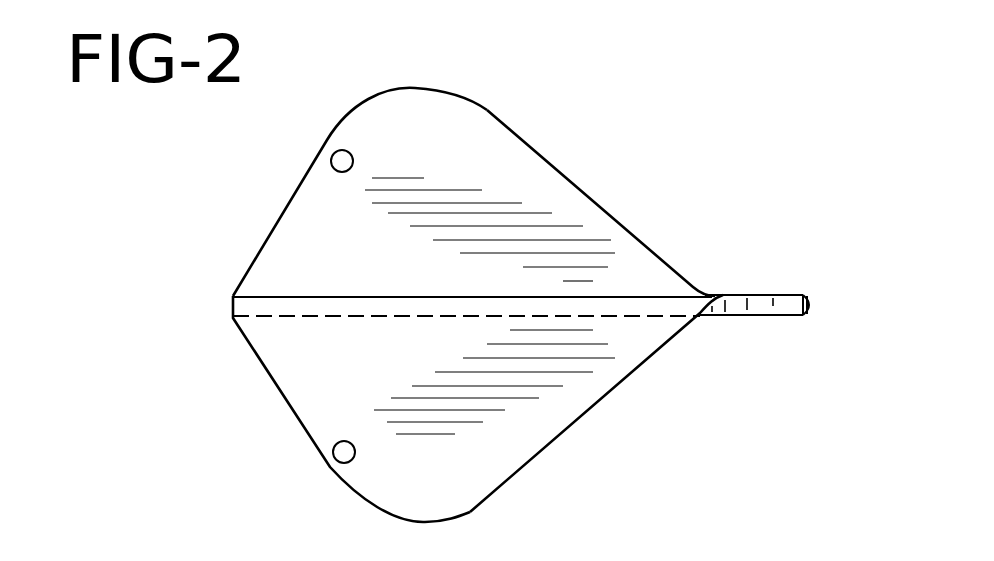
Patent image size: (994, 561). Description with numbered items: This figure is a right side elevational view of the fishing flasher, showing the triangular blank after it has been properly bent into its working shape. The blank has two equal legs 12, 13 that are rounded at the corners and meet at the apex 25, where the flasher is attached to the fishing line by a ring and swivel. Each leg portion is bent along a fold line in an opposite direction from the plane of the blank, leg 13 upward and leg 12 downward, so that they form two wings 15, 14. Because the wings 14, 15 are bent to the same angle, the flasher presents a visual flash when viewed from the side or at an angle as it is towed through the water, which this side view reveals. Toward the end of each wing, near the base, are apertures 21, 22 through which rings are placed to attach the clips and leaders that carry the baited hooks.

The leg 12 is at (553, 452).
The leg 13 is at (563, 168).
The wing 14 is at (317, 377).
The wing 15 is at (433, 131).
The aperture 21 is at (342, 172).
The aperture 22 is at (336, 458).
The apex 25 is at (818, 302).